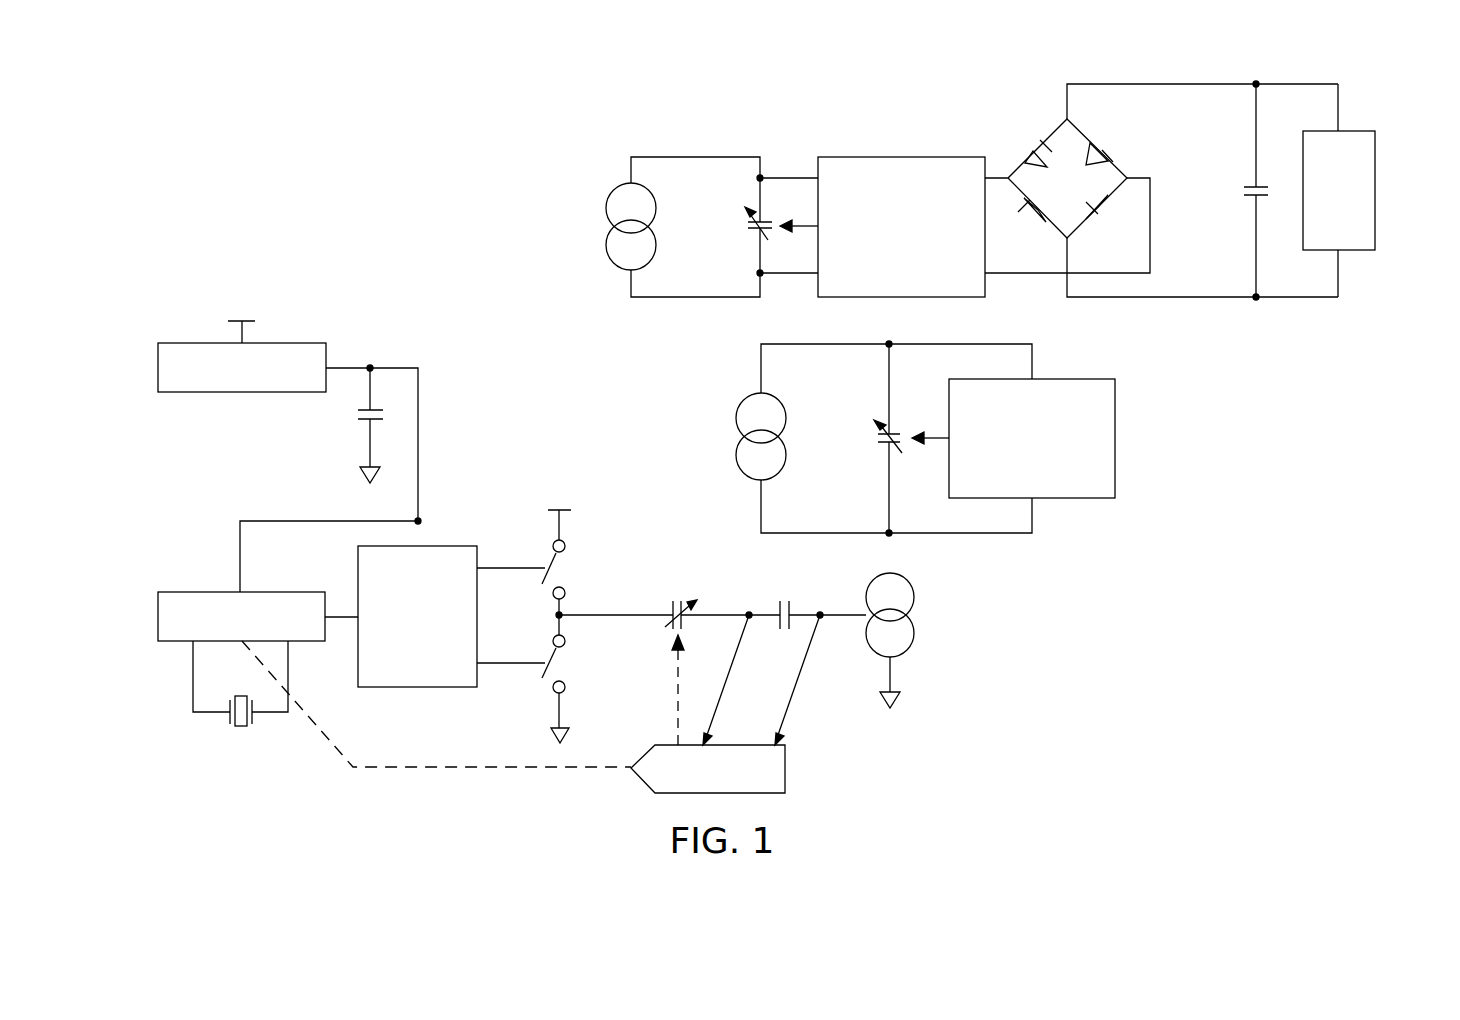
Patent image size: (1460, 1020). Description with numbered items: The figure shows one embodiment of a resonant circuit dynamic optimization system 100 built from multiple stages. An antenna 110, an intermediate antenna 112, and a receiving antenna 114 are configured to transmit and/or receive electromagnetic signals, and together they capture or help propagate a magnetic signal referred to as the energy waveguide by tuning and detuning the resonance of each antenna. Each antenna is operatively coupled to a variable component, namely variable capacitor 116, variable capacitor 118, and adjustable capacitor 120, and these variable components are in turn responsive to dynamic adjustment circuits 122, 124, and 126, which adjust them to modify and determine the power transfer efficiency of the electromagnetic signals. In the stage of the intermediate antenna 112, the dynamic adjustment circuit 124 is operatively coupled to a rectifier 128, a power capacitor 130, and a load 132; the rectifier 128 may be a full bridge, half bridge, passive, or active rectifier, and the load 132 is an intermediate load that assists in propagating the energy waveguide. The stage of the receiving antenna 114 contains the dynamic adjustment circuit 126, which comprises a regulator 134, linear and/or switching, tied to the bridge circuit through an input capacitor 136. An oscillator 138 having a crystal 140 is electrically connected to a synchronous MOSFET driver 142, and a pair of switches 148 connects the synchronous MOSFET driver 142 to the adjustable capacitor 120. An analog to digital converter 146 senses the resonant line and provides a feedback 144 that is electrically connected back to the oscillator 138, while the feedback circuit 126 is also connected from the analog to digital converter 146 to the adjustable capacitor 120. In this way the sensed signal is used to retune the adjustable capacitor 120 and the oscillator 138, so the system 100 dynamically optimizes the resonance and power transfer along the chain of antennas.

The resonant circuit dynamic optimization system 100 is at (312, 178).
The antenna 110 is at (735, 425).
The intermediate antenna 112 is at (606, 210).
The receiving antenna 114 is at (915, 632).
The variable component 116 is at (878, 440).
The variable component 118 is at (745, 228).
The variable component 120 is at (676, 600).
The dynamic adjustment circuit 122 is at (1118, 440).
The dynamic adjustment circuit 124 is at (903, 156).
The dynamic adjustment circuit 126 is at (675, 683).
The rectifier 128 is at (1050, 125).
The power capacitor 130 is at (1243, 190).
The load 132 is at (1377, 190).
The regulator 134 is at (156, 356).
The input capacitor 136 is at (356, 416).
The oscillator 138 is at (156, 630).
The crystal 140 is at (240, 730).
The synchronous MOSFET driver 142 is at (405, 690).
The feedback 144 is at (482, 770).
The analog to digital converter 146 is at (790, 768).
The pair of switches 148 is at (543, 550).